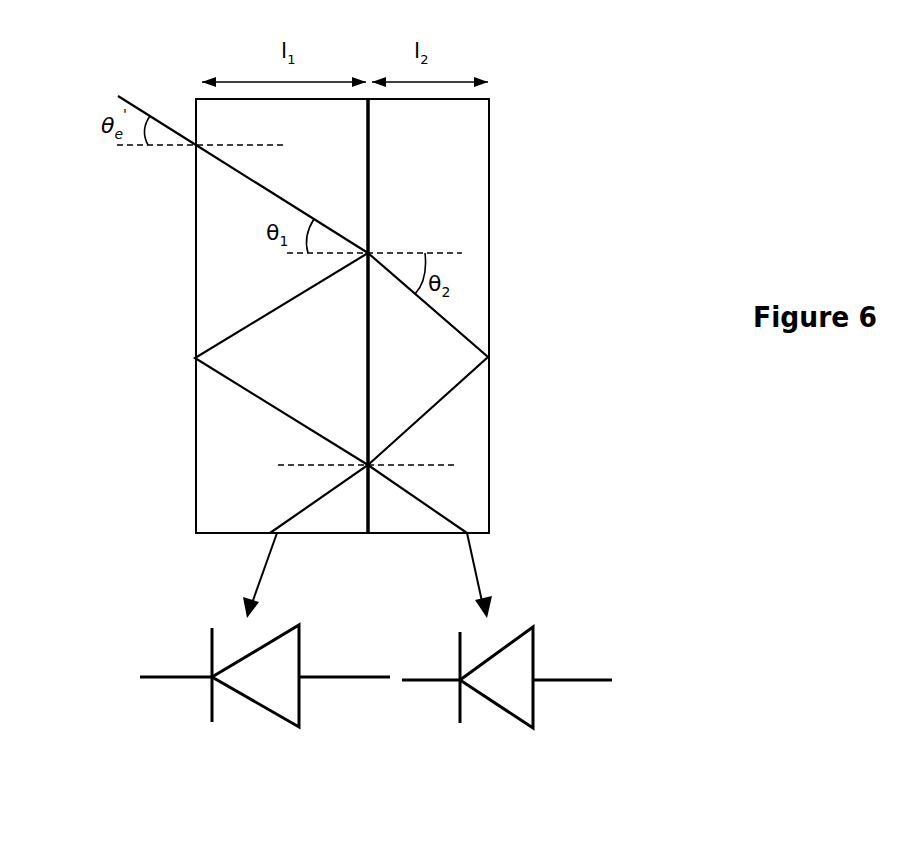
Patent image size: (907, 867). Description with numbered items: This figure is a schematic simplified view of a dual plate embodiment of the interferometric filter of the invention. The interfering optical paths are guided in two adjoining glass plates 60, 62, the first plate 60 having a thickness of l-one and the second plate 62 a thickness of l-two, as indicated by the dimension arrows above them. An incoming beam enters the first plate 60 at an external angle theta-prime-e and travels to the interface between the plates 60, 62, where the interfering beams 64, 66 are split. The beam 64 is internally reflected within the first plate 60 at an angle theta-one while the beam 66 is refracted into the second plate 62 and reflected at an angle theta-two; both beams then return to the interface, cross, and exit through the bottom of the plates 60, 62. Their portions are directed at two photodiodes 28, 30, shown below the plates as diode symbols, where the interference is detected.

The glass plate 60 is at (196, 247).
The glass plate 62 is at (489, 162).
The interfering beam 64 is at (262, 402).
The interfering beam 66 is at (433, 405).
The photodiode 28 is at (262, 717).
The photodiode 30 is at (508, 717).